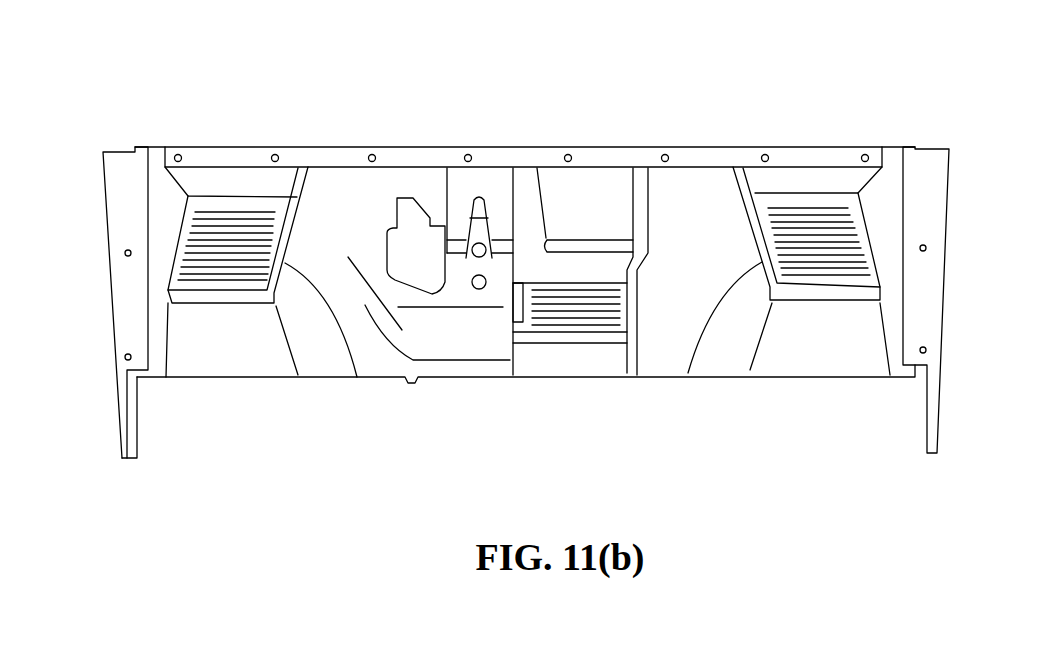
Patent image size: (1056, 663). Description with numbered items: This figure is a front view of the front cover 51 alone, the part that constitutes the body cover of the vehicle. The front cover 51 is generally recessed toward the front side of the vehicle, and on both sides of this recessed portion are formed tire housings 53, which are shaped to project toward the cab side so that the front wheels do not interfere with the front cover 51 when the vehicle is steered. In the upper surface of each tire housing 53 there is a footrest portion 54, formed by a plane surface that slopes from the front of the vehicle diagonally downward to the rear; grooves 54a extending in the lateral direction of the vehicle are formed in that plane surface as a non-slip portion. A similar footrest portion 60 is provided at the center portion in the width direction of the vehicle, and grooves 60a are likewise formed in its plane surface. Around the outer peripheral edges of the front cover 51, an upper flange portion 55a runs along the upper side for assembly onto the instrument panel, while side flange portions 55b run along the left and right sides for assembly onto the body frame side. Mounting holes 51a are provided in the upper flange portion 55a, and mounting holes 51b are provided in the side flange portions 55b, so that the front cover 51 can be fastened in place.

The front cover 51 is at (822, 165).
The mounting holes 51a is at (178, 154).
The mounting holes 51b is at (124, 253).
The tire housings 53 is at (330, 362).
The footrest portion 54 is at (233, 287).
The grooves 54a is at (210, 275).
The upper flange portion 55a is at (527, 160).
The side flange portions 55b is at (123, 287).
The footrest portion 60 is at (560, 325).
The grooves 60a is at (602, 312).